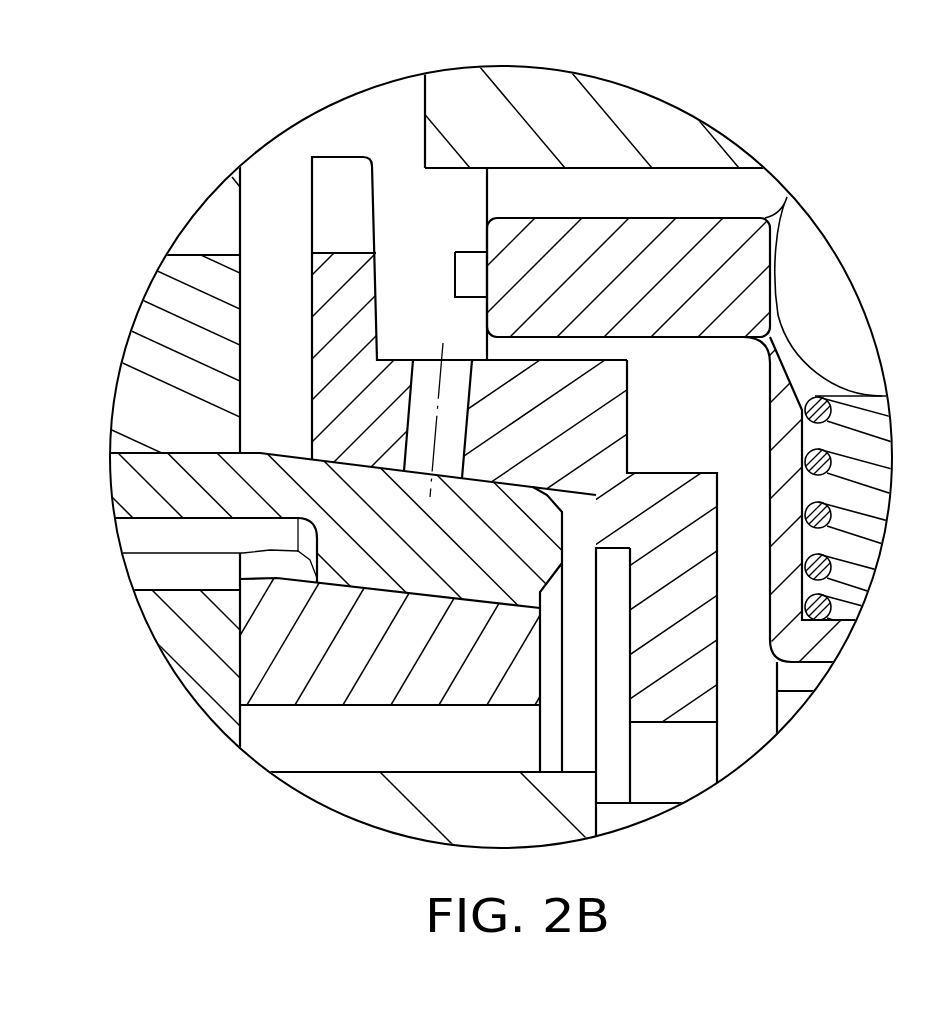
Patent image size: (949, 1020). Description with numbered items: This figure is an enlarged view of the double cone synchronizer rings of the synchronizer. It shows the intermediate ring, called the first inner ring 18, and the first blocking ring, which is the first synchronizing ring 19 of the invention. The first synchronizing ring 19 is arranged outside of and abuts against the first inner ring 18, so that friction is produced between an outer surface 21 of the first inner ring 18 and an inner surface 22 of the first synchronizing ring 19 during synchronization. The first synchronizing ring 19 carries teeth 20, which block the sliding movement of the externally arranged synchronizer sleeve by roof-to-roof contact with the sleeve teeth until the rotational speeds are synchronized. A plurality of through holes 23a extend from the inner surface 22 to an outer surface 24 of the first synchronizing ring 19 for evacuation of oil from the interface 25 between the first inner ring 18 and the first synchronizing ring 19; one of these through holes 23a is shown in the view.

The intermediate ring 18 is at (413, 533).
The first blocking ring 19 is at (598, 418).
The teeth 20 is at (347, 197).
The outer surface 21 is at (537, 468).
The inner surface 22 is at (359, 486).
The through holes 23a is at (425, 401).
The outer surface 24 is at (539, 345).
The interface 25 is at (467, 483).